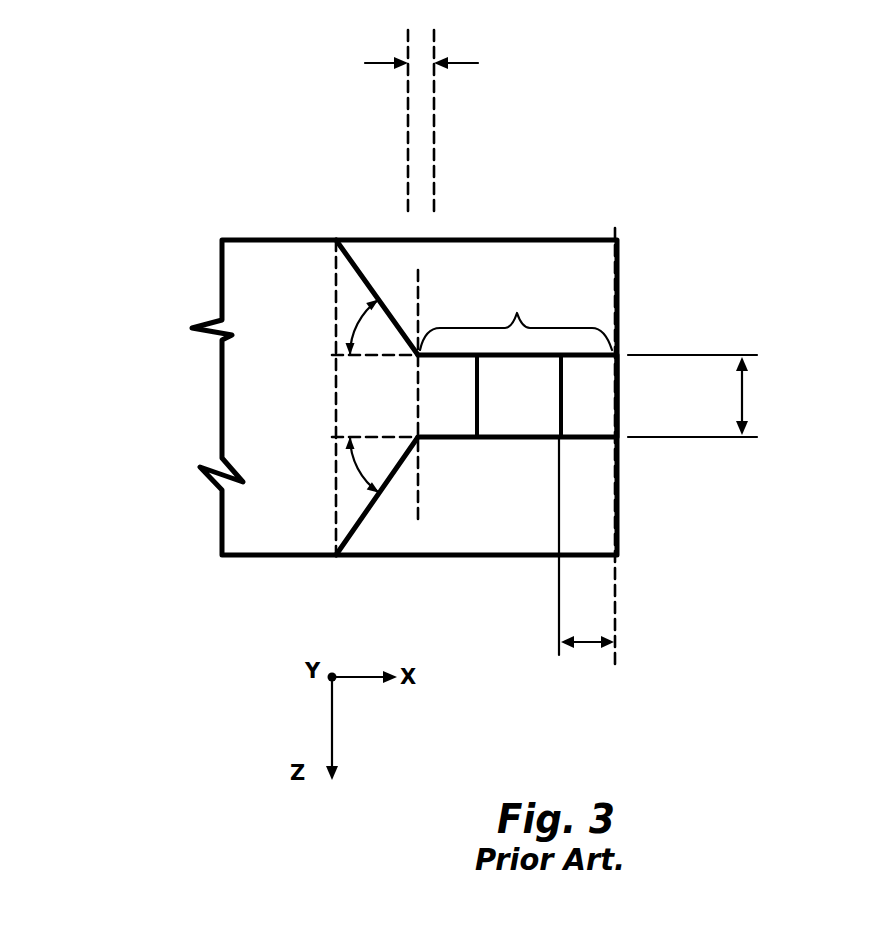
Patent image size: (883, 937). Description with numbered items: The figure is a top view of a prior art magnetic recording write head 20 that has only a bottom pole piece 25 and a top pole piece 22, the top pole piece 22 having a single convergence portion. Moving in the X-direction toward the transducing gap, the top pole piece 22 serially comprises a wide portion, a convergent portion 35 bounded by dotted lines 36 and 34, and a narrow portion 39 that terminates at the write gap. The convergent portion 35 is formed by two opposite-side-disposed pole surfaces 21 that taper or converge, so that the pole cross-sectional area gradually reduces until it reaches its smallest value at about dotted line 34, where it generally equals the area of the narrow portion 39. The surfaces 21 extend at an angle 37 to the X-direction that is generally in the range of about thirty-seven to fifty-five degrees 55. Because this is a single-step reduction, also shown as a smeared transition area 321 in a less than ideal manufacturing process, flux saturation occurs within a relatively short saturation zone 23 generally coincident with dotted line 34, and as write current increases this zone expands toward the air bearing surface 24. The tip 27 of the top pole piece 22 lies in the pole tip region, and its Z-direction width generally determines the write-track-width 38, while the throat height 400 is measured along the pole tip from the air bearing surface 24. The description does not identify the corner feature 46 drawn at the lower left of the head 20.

The magnetic recording write head 20 is at (762, 138).
The pole surfaces 21 is at (370, 238).
The top pole piece 22 is at (597, 421).
The flux saturation zone 23 is at (420, 300).
The air bearing surface 24 is at (617, 468).
The bottom pole piece 25 is at (530, 535).
The tip of top pole 27 is at (593, 396).
The dotted line 34 is at (418, 477).
The convergent portion 35 is at (358, 500).
The dotted line 36 is at (336, 458).
The angle 37 is at (378, 350).
The write-track-width 38 is at (743, 405).
The narrow portion 39 is at (517, 313).
The yoke corner 46 is at (267, 523).
The convergence angle (degrees) 55 is at (353, 470).
The smeared transition area 321 is at (418, 66).
The throat height 400 is at (590, 640).